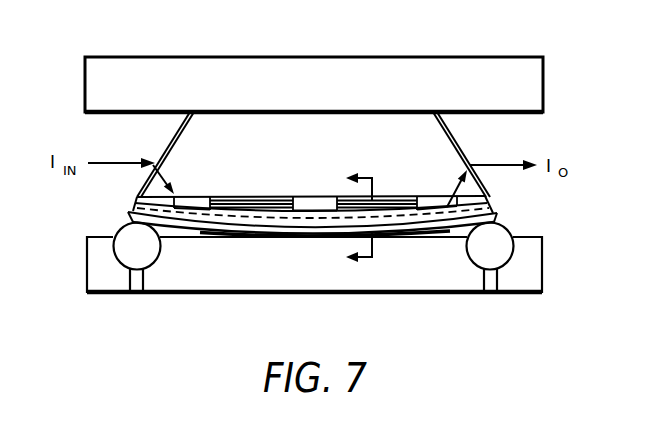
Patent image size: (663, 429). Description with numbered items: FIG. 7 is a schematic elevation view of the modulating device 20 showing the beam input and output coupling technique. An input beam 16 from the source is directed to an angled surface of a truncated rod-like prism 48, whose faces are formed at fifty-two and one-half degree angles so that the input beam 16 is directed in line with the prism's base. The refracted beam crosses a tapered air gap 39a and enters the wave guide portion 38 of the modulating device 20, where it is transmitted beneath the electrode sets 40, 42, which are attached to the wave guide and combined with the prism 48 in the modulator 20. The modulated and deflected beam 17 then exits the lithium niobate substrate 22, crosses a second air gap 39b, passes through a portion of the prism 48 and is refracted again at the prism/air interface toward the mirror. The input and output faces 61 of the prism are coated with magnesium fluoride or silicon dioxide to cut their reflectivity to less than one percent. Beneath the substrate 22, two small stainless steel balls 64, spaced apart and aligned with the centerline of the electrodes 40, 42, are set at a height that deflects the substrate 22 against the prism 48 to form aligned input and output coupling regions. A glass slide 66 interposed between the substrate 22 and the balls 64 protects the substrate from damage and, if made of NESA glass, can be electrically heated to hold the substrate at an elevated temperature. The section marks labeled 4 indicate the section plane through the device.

The modulating device 20 is at (314, 176).
The truncated rod-like prism 48 is at (237, 103).
The input and output faces 61 is at (176, 134).
The input beam 16 is at (102, 178).
The modulated beam 17 is at (507, 164).
The tapered air gap 39a is at (190, 196).
The second air gap 39b is at (432, 197).
The electrode set 40 is at (248, 196).
The electrode set 42 is at (407, 197).
The lithium niobate substrate 22 is at (491, 198).
The wave guide portion 38 is at (210, 216).
The glass slide 66 is at (254, 235).
The stainless steel balls 64 is at (117, 250).
The section line 4- 4 is at (349, 213).